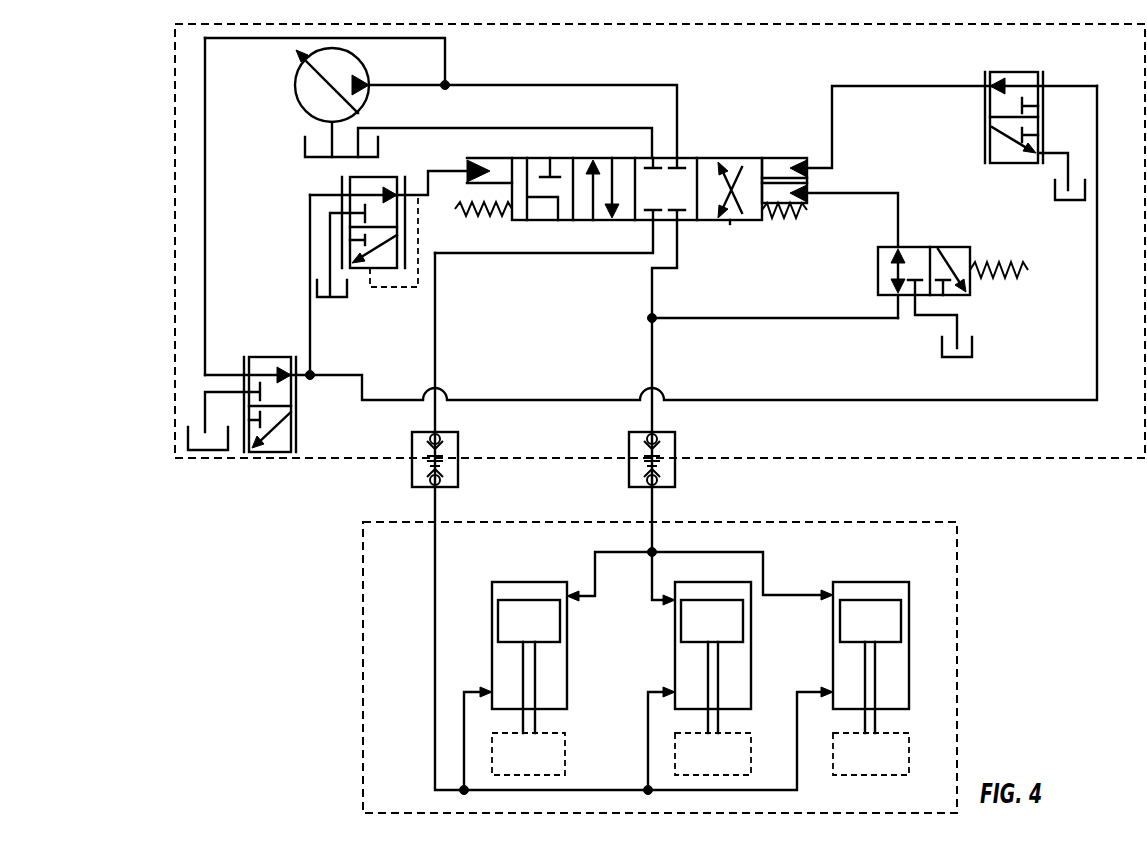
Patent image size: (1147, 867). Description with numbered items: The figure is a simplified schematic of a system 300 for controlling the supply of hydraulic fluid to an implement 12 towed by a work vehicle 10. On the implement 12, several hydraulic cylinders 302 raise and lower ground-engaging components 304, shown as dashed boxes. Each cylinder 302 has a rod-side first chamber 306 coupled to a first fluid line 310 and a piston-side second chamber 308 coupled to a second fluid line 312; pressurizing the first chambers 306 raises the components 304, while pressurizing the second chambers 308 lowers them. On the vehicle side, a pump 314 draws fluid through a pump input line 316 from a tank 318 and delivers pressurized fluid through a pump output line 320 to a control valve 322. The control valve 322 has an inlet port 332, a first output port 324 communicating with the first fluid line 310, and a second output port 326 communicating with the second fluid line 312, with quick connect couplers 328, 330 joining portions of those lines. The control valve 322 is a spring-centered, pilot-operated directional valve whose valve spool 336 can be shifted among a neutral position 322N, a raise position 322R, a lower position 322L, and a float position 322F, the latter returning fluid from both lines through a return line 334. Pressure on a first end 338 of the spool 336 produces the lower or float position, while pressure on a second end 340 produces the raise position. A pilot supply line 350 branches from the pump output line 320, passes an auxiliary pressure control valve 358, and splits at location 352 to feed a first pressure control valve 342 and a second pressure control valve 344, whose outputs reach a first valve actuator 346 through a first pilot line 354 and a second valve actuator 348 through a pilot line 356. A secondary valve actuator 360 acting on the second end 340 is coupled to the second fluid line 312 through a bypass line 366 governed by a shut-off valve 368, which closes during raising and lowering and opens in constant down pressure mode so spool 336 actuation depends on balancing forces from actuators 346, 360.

The work vehicle 10 is at (1110, 466).
The implement 12 is at (352, 665).
The system 300 is at (660, 417).
The hydraulic cylinders 302 is at (702, 666).
The ground-engaging components 304 is at (555, 733).
The first chamber 306 is at (505, 664).
The second chamber 308 is at (540, 590).
The first fluid line 310 is at (436, 316).
The second fluid line 312 is at (653, 296).
The pump 314 is at (312, 76).
The pump input line 316 is at (331, 126).
The tank 318 is at (305, 148).
The pump output line 320 is at (520, 84).
The control valve 322 is at (650, 135).
The float position 322F is at (549, 157).
The lower position 322L is at (624, 157).
The neutral position 322N is at (681, 157).
The raise position 322R is at (729, 166).
The first output port 324 is at (652, 228).
The second output port 326 is at (682, 228).
The first quick connect coupler 328 is at (459, 471).
The second quick connect coupler 330 is at (676, 471).
The inlet port 332 is at (676, 155).
The return line 334 is at (430, 127).
The valve spool 336 is at (738, 231).
The first end 338 is at (512, 219).
The second end 340 is at (766, 220).
The first pressure control valve 342 is at (346, 177).
The second pressure control valve 344 is at (1032, 68).
The first valve actuator 346 is at (494, 157).
The second valve actuator 348 is at (785, 164).
The pilot supply line 350 is at (206, 148).
The split location 352 is at (310, 380).
The first pilot line 354 is at (427, 176).
The pilot line 356 is at (914, 86).
The auxiliary pressure control valve 358 is at (264, 352).
The secondary valve actuator 360 is at (809, 189).
The bypass line 366 is at (775, 318).
The shut-off valve 368 is at (978, 299).